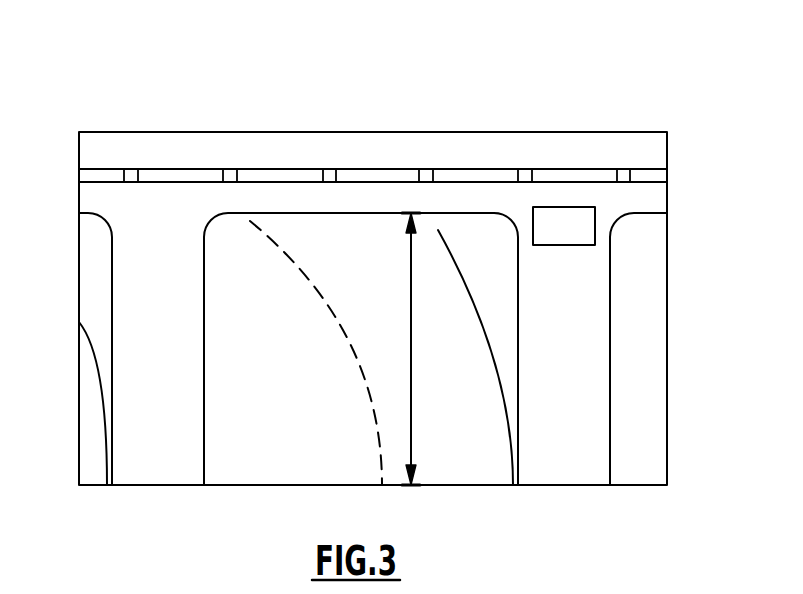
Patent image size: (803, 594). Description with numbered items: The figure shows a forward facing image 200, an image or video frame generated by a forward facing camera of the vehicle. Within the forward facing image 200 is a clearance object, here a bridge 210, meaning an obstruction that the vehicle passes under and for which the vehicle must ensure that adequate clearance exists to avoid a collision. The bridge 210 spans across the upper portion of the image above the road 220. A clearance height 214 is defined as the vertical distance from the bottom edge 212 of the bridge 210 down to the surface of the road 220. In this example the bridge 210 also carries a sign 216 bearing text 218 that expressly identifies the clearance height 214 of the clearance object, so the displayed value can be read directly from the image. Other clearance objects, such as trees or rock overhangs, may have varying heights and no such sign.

The forward facing image 200 is at (136, 100).
The bridge 210 is at (353, 157).
The bottom edge 212 is at (272, 215).
The clearance height 214 is at (411, 283).
The sign 216 is at (595, 217).
The text 218 is at (563, 207).
The road 220 is at (457, 447).